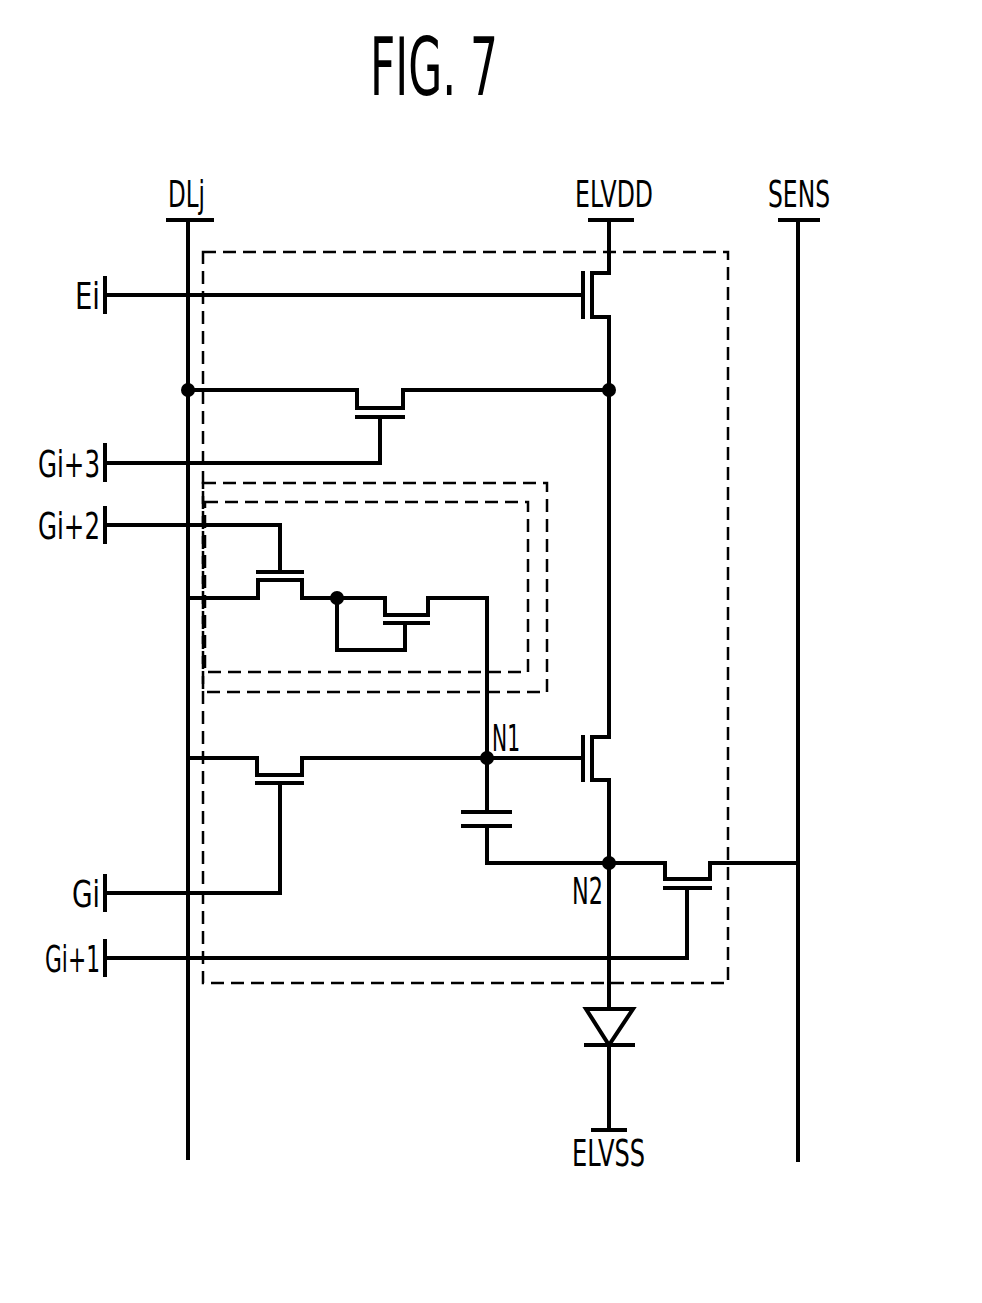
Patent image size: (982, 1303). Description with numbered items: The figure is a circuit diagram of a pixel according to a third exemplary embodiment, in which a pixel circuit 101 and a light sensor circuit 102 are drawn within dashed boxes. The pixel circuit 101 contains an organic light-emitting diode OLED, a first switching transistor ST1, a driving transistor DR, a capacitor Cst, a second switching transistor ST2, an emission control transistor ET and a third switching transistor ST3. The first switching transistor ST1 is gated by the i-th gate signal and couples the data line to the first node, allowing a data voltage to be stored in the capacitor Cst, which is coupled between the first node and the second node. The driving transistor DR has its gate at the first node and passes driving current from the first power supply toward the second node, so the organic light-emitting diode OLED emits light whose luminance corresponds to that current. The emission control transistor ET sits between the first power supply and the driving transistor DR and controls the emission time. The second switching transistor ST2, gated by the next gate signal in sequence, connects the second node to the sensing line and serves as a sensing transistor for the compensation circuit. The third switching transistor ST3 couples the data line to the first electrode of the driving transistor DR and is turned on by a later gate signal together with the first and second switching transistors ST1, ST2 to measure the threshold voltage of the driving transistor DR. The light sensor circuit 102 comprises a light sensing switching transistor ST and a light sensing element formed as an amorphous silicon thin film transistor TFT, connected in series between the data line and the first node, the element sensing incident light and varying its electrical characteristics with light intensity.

The pixel circuit 101 is at (410, 250).
The light sensor circuit 102 is at (203, 633).
The emission control transistor ET is at (613, 296).
The third switching transistor ST3 is at (380, 405).
The light sensing switching transistor ST is at (280, 605).
The amorphous silicon thin film transistor TFT is at (401, 601).
The first switching transistor ST1 is at (279, 803).
The driving transistor DR is at (614, 760).
The capacitor Cst is at (508, 822).
The second switching transistor ST2 is at (687, 891).
The organic light-emitting diode OLED is at (643, 1027).